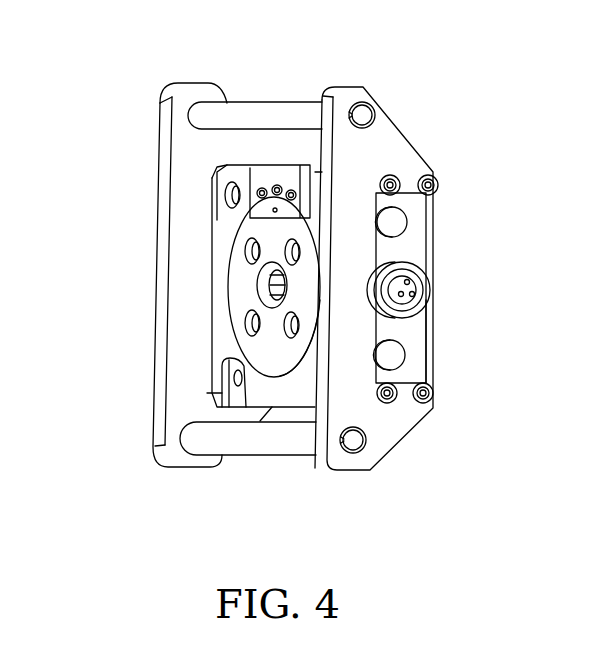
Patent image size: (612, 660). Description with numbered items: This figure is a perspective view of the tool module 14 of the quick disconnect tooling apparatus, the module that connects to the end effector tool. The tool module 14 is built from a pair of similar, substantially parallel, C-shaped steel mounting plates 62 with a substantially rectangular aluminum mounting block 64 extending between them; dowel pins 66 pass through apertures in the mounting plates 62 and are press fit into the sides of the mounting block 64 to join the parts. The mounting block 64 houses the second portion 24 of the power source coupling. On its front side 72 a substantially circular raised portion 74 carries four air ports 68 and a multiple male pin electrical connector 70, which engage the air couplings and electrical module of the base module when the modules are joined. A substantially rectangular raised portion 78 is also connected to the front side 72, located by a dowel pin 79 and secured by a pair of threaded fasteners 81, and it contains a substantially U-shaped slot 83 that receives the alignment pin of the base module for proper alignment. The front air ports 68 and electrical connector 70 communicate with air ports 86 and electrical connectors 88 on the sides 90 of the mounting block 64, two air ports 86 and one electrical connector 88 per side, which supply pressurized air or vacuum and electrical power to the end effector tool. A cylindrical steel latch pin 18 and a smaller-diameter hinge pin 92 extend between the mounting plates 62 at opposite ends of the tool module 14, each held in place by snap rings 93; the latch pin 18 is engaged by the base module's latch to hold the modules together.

The tool module 14 is at (145, 405).
The latch pin 18 is at (268, 468).
The second portion of the power source coupling 24 is at (232, 316).
The mounting plates 62 is at (197, 72).
The mounting block 64 is at (445, 254).
The dowel pins 66 is at (395, 175).
The air ports 68 is at (248, 240).
The electrical connector 70 is at (246, 287).
The front side 72 is at (217, 257).
The circular raised portion 74 is at (243, 238).
The rectangular raised portion 78 is at (322, 172).
The dowel pin 79 is at (278, 210).
The threaded fasteners 81 is at (261, 178).
The U-shaped slot 83 is at (278, 185).
The air ports 86 is at (407, 222).
The electrical connectors 88 is at (445, 291).
The sides 90 is at (428, 325).
The hinge pin 92 is at (250, 90).
The snap rings 93 is at (363, 101).